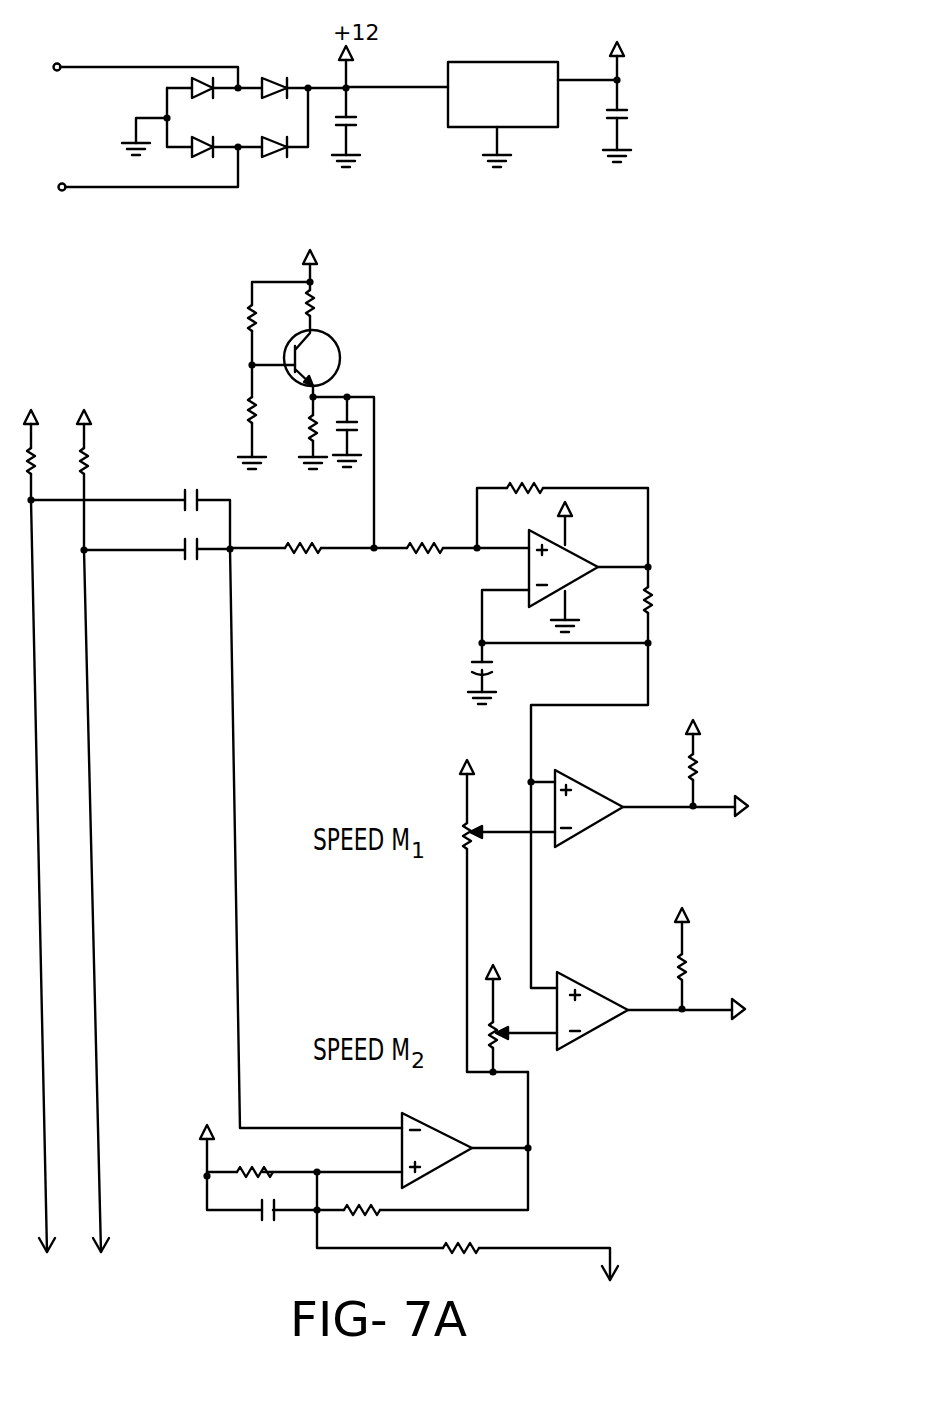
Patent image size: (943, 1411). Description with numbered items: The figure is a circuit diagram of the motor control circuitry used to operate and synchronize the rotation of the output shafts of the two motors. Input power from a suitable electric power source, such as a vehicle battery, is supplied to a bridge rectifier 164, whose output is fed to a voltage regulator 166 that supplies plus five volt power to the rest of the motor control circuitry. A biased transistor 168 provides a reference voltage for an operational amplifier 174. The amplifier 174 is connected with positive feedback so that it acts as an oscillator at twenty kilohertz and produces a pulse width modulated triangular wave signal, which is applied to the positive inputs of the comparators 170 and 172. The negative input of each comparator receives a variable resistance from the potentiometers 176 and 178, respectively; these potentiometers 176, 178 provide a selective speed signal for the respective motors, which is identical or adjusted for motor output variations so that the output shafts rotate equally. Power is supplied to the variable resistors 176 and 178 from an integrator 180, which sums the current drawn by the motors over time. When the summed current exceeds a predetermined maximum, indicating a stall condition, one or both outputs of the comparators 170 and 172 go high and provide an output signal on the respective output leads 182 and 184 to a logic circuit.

The bridge rectifier 164 is at (297, 133).
The voltage regulator 166 is at (523, 62).
The biased transistor 168 is at (340, 347).
The comparator 170 is at (584, 789).
The comparator 172 is at (598, 1002).
The operational amplifier 174 is at (577, 553).
The potentiometer 176 is at (460, 832).
The potentiometer 178 is at (487, 1031).
The integrator 180 is at (438, 1132).
The output lead 182 is at (737, 790).
The output lead 184 is at (730, 995).